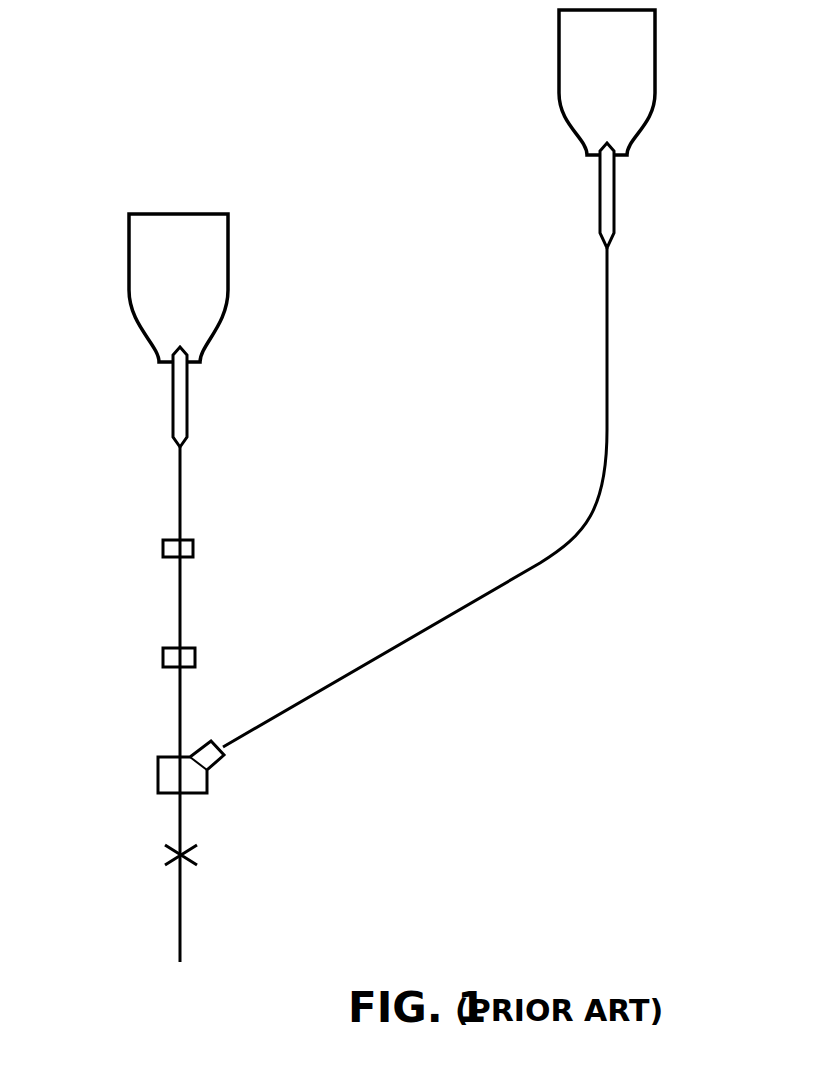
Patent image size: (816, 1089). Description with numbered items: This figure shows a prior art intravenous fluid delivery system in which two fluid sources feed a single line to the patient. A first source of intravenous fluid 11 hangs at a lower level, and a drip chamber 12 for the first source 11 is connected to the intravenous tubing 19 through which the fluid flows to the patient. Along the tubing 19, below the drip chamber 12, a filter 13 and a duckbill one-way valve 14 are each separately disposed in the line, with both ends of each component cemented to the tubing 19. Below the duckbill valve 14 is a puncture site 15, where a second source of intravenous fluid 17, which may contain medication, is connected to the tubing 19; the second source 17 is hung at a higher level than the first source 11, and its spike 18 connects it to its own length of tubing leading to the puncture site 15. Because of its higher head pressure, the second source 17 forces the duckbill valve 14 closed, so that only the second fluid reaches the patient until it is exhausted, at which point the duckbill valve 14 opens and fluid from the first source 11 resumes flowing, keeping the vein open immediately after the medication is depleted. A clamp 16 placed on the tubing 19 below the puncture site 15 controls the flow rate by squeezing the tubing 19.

The first source of intravenous fluid 11 is at (228, 290).
The drip chamber 12 is at (187, 408).
The filter 13 is at (193, 540).
The duckbill valve 14 is at (195, 655).
The puncture site 15 is at (207, 778).
The clamp 16 is at (200, 852).
The second source of intravenous fluid 17 is at (655, 93).
The second spike 18 is at (614, 210).
The intravenous tubing 19 is at (178, 588).